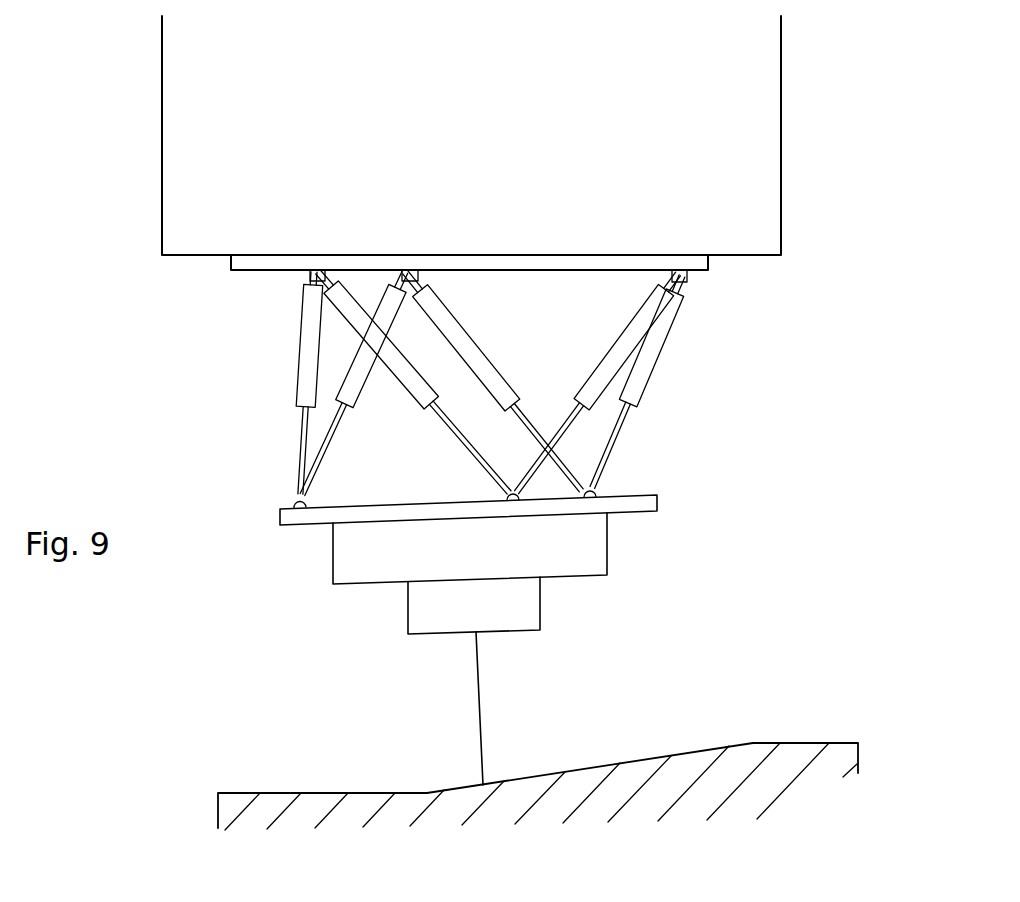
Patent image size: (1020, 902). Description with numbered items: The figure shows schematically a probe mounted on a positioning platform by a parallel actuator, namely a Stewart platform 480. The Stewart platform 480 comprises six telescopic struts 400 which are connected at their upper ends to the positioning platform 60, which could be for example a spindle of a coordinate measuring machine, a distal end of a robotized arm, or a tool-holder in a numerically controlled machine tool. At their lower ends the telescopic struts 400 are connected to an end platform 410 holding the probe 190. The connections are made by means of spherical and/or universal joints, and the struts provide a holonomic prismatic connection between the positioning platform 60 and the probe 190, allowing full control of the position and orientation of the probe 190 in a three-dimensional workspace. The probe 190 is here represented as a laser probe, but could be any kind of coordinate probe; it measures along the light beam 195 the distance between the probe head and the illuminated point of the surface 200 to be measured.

The positioning platform 60 is at (768, 159).
The Stewart platform 480 is at (597, 385).
The telescopic struts 400 is at (467, 422).
The end platform 410 is at (303, 522).
The laser probe 190 is at (598, 562).
The light beam 195 is at (477, 708).
The workpiece surface 200 is at (787, 760).